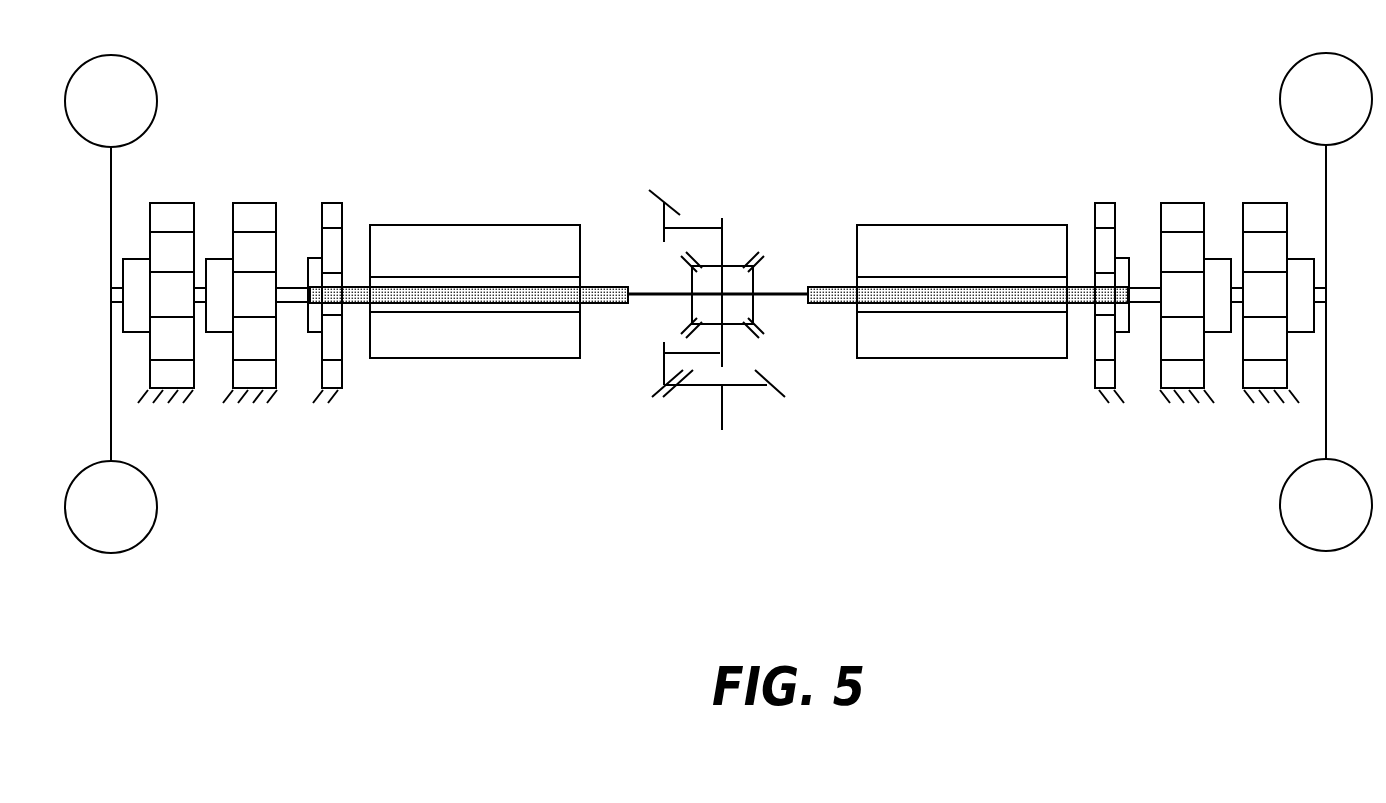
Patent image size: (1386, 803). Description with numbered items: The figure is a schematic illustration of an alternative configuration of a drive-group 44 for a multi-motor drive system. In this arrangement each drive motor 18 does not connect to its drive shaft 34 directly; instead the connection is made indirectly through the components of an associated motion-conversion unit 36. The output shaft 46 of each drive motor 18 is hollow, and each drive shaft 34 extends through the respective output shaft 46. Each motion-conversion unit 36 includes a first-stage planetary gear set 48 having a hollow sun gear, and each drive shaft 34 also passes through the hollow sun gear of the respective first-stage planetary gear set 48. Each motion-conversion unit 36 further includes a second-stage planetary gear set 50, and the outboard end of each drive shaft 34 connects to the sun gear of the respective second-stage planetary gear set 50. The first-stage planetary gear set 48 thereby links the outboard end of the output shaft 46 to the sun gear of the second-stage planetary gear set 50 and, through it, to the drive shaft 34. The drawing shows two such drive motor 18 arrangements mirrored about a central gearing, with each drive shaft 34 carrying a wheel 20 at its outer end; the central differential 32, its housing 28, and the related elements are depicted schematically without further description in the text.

The drive motor 18 is at (445, 225).
The wheel 20 is at (113, 170).
The differential housing 28 is at (616, 146).
The differential gear set 32 is at (725, 308).
The drive shaft 34 is at (773, 292).
The motion-conversion unit 36 is at (252, 424).
The drive-group 44 is at (804, 109).
The output shaft 46 is at (347, 315).
The first-stage planetary gear set 48 is at (323, 202).
The second-stage planetary gear set 50 is at (252, 202).